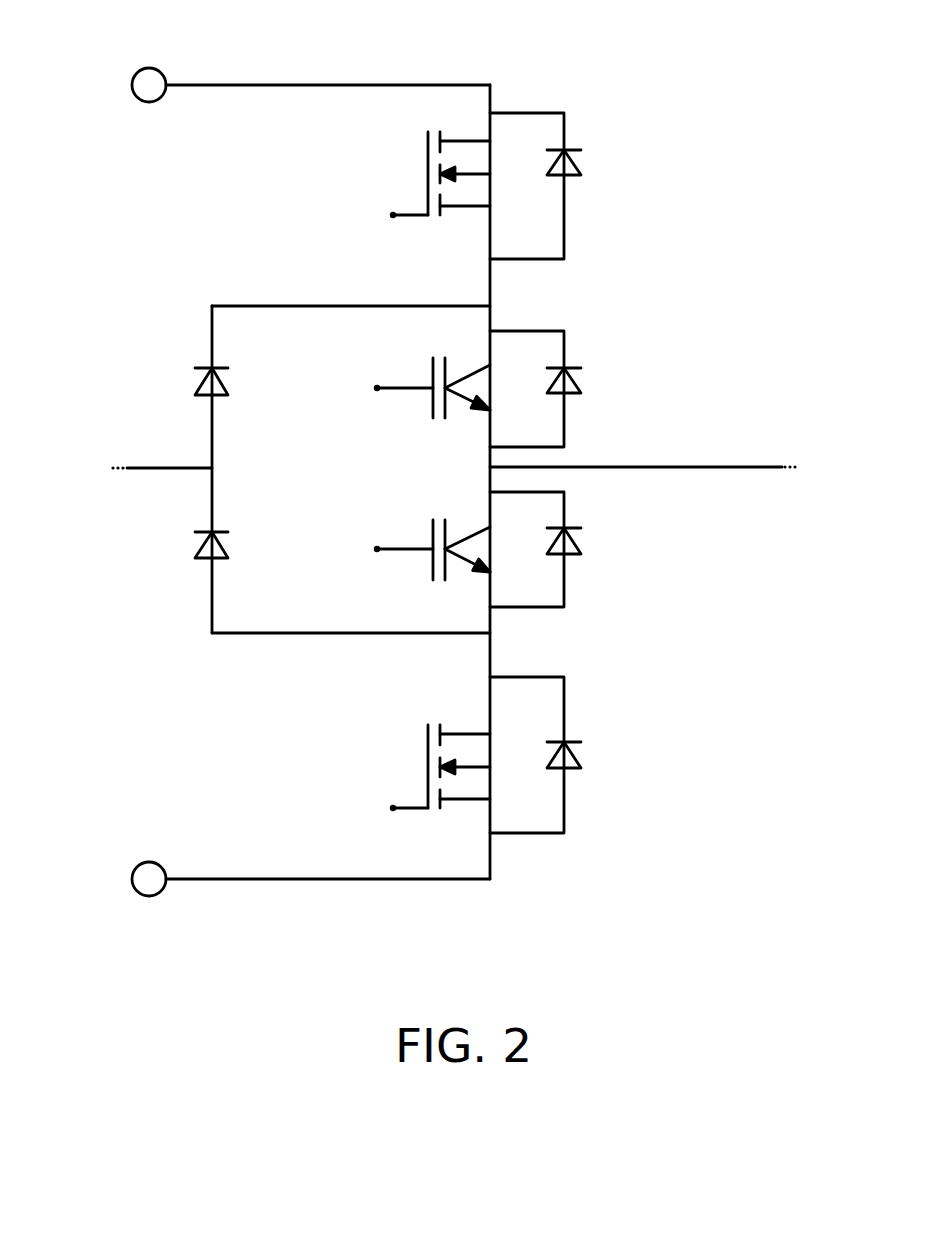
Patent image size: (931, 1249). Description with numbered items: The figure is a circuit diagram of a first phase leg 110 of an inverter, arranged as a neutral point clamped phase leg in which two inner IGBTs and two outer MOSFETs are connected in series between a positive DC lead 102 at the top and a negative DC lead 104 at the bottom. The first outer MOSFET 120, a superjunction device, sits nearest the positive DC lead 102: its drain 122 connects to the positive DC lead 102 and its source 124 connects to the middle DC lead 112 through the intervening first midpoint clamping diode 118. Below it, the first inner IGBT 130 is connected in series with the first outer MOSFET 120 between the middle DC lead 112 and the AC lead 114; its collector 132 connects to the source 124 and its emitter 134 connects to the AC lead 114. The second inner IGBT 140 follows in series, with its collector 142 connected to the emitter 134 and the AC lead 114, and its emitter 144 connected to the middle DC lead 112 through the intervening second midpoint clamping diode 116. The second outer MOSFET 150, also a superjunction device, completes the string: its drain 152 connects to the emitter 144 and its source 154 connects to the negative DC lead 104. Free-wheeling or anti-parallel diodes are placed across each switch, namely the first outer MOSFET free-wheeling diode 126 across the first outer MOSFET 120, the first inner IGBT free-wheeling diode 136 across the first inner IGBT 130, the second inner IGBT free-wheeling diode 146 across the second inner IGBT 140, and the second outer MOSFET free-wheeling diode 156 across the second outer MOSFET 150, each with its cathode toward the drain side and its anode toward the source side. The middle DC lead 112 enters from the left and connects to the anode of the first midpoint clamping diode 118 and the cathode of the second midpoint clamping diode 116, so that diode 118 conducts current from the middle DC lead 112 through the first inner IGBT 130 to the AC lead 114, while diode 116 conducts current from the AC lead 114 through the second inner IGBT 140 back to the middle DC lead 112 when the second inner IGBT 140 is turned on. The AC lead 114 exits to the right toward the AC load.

The positive DC lead 102 is at (289, 85).
The negative DC lead 104 is at (298, 879).
The first phase leg 110 is at (197, 929).
The middle DC lead 112 is at (152, 468).
The AC lead 114 is at (707, 467).
The second midpoint clamping diode 116 is at (228, 550).
The first midpoint clamping diode 118 is at (228, 385).
The first outer MOSFET 120 is at (371, 183).
The drain 122 is at (490, 125).
The source 124 is at (490, 222).
The first outer MOSFET free-wheeling diode 126 is at (580, 168).
The first inner IGBT 130 is at (378, 386).
The collector 132 is at (470, 375).
The emitter 134 is at (470, 403).
The first inner IGBT free-wheeling diode 136 is at (577, 380).
The second inner IGBT 140 is at (376, 540).
The collector 142 is at (478, 530).
The emitter 144 is at (467, 560).
The second inner IGBT free-wheeling diode 146 is at (575, 538).
The second outer MOSFET 150 is at (359, 780).
The drain 152 is at (490, 708).
The source 154 is at (490, 815).
The second outer MOSFET free-wheeling diode 156 is at (578, 757).